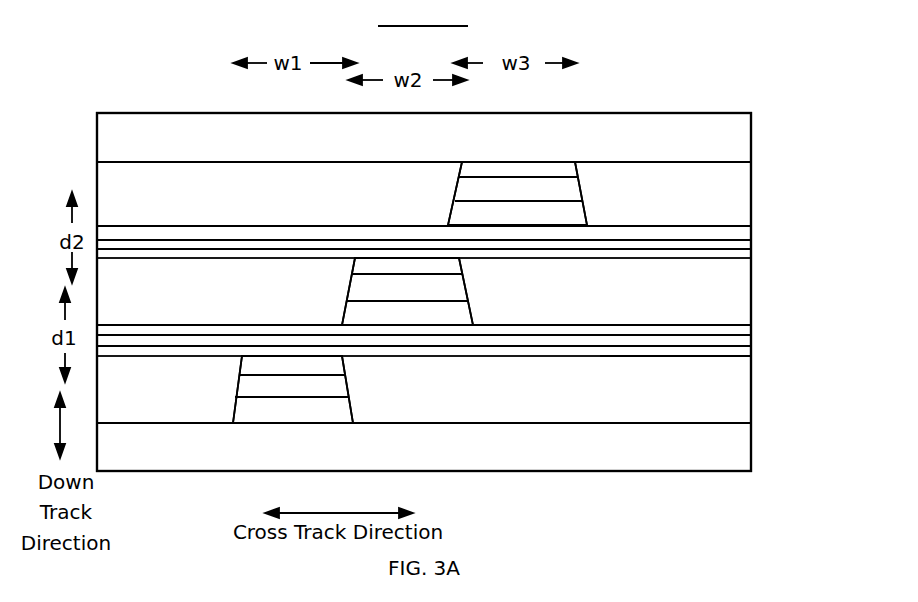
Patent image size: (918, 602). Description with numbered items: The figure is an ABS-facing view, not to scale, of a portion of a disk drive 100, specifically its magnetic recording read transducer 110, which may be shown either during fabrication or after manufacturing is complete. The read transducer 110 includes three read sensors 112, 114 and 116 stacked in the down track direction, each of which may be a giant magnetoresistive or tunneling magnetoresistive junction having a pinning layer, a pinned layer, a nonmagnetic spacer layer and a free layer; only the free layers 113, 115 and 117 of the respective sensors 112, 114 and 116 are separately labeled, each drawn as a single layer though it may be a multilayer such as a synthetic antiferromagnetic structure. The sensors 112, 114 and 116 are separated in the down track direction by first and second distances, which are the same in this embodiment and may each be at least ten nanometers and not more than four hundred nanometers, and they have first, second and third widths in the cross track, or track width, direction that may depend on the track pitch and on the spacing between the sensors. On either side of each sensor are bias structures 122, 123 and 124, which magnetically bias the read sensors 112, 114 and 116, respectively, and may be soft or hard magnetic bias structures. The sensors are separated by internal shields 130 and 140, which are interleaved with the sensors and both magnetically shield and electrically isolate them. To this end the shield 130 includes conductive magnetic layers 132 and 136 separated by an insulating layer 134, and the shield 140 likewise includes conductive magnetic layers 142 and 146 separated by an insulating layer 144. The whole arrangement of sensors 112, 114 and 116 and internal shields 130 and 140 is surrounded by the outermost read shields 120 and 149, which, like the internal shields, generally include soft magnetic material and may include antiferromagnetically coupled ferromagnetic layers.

The disk drive 100 is at (424, 237).
The read transducer 110 is at (424, 292).
The first read sensor 112 is at (271, 447).
The free layer of first read sensor 113 is at (293, 389).
The second read sensor 114 is at (413, 347).
The free layer of second read sensor 115 is at (407, 291).
The third read sensor 116 is at (540, 140).
The free layer of third read sensor 117 is at (517, 193).
The read shield 120 is at (424, 452).
The first magnetic bias structure 122 is at (424, 393).
The second magnetic bias structure 123 is at (424, 294).
The third magnetic bias structure 124 is at (424, 196).
The first internal shield 130 is at (688, 380).
The conductive magnetic layer of shield 130 132 is at (700, 360).
The insulating layer of shield 130 134 is at (751, 346).
The conductive magnetic layer of shield 130 136 is at (751, 330).
The second internal shield 140 is at (702, 195).
The conductive magnetic layer of shield 140 142 is at (751, 253).
The insulating layer of shield 140 144 is at (751, 242).
The conductive magnetic layer of shield 140 146 is at (717, 226).
The read shield 149 is at (424, 143).